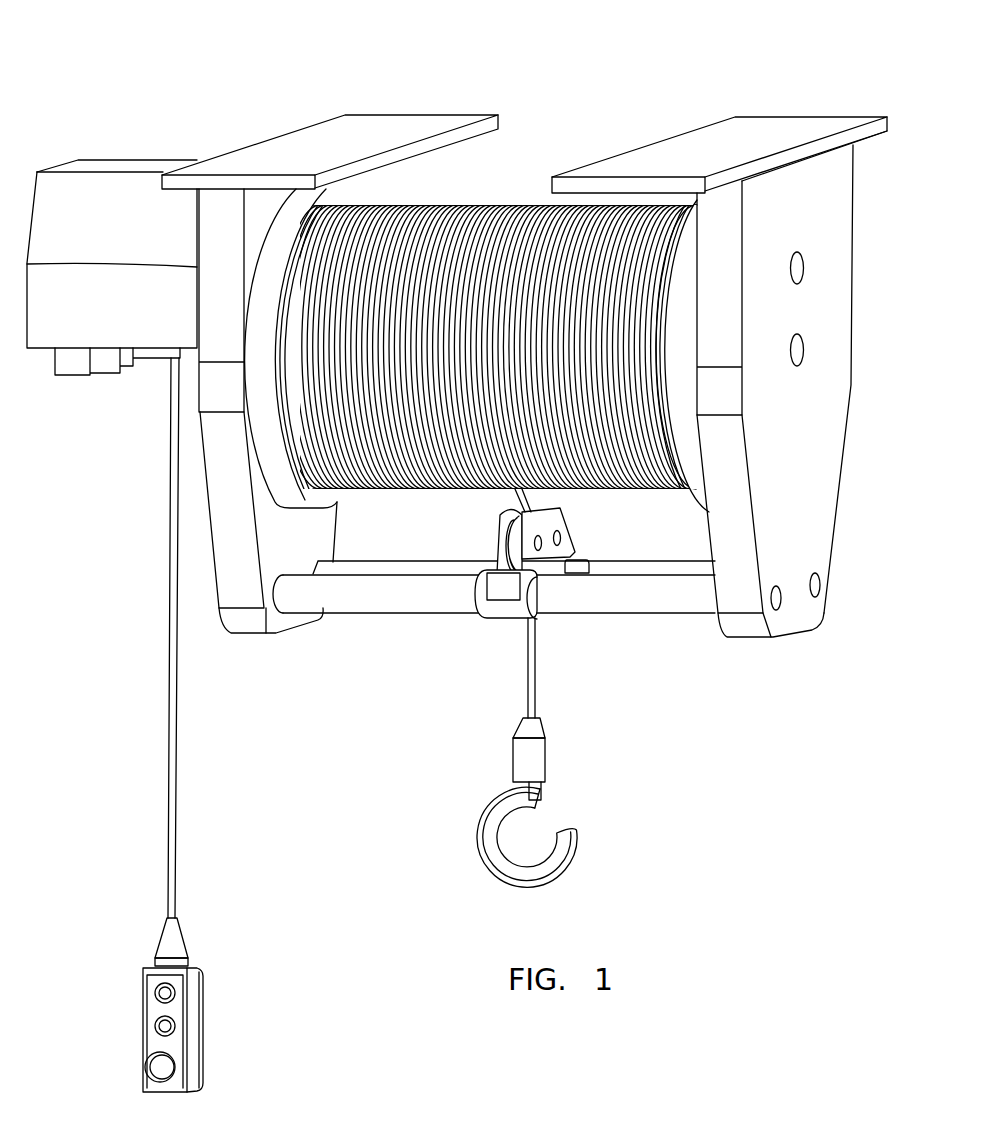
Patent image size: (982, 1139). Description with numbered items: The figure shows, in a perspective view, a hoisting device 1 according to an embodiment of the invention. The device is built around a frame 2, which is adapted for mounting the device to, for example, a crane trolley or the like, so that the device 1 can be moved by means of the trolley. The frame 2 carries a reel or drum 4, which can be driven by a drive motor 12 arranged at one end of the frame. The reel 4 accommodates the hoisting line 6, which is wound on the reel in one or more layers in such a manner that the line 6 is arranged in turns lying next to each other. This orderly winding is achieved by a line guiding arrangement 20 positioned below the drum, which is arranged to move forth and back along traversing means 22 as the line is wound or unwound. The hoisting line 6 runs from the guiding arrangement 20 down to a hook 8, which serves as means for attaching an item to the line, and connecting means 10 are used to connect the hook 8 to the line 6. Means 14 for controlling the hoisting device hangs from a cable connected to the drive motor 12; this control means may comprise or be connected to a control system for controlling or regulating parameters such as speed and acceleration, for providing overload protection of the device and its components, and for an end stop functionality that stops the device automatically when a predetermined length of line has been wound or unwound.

The hoisting device 1 is at (583, 86).
The frame 2 is at (318, 142).
The reel 4 is at (626, 504).
The hoisting line 6 is at (518, 493).
The hook 8 is at (475, 838).
The connecting means 10 is at (535, 757).
The drive motor 12 is at (125, 167).
The means for controlling the hoisting device 14 is at (203, 1010).
The line guiding arrangement 20 is at (497, 540).
The traversing means 22 is at (693, 612).